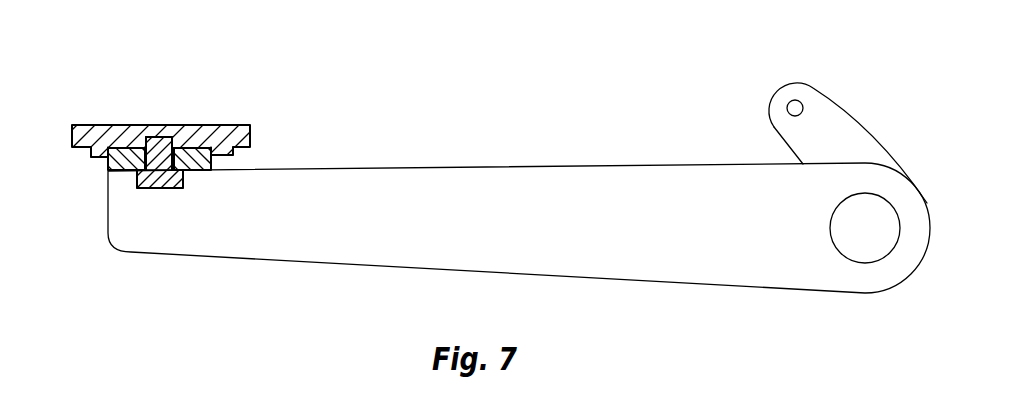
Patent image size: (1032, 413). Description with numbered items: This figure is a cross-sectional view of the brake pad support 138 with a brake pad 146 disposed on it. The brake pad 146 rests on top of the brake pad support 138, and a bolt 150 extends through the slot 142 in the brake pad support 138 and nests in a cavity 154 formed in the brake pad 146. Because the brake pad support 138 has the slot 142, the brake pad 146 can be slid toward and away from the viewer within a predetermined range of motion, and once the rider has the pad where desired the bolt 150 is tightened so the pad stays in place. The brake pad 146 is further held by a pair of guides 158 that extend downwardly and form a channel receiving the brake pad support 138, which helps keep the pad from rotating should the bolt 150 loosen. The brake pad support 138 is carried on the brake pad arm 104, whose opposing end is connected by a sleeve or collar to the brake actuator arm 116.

The brake pad arm 104 is at (338, 243).
The brake actuator arm 116 is at (837, 118).
The brake pad support 138 is at (128, 173).
The slot 142 is at (142, 142).
The brake pad 146 is at (203, 132).
The bolt 150 is at (160, 180).
The cavity 154 is at (172, 140).
The guides 158 is at (85, 157).